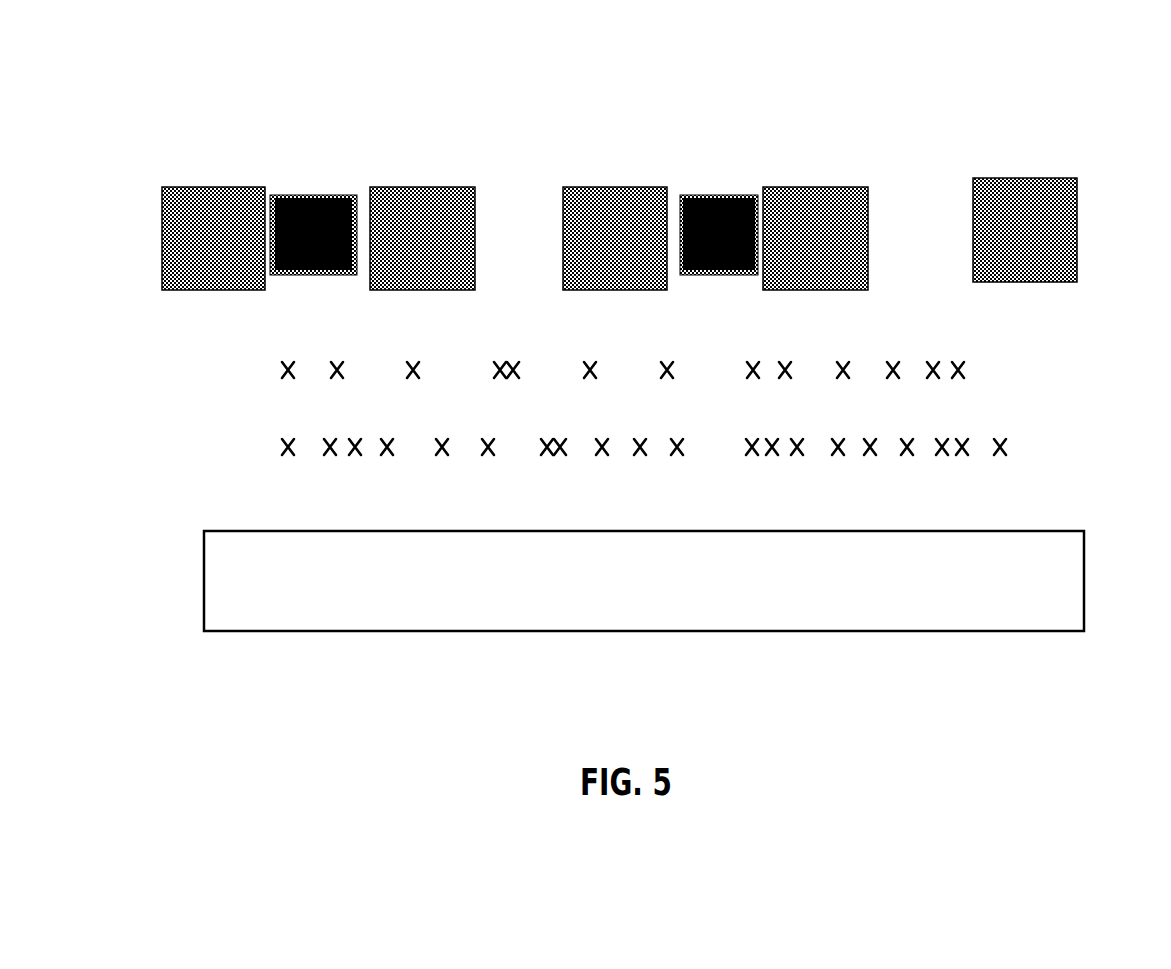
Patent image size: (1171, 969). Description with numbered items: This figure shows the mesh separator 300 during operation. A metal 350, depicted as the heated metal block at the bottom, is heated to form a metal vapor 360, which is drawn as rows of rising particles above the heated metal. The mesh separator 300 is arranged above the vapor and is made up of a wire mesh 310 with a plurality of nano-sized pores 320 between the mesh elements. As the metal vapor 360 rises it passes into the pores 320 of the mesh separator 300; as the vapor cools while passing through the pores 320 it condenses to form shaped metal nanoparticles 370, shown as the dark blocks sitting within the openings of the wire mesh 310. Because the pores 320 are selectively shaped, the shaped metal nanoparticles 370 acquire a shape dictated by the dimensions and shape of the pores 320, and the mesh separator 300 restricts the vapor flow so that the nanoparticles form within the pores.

The mesh separator 300 is at (238, 113).
The wire mesh 310 is at (412, 197).
The nano-sized pores 320 is at (527, 230).
The metal 350 is at (878, 635).
The metal vapor 360 is at (273, 415).
The shaped metal nanoparticles 370 is at (718, 197).